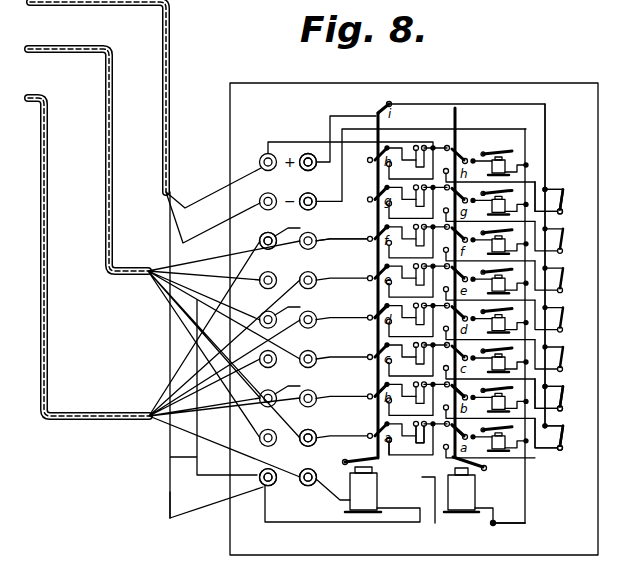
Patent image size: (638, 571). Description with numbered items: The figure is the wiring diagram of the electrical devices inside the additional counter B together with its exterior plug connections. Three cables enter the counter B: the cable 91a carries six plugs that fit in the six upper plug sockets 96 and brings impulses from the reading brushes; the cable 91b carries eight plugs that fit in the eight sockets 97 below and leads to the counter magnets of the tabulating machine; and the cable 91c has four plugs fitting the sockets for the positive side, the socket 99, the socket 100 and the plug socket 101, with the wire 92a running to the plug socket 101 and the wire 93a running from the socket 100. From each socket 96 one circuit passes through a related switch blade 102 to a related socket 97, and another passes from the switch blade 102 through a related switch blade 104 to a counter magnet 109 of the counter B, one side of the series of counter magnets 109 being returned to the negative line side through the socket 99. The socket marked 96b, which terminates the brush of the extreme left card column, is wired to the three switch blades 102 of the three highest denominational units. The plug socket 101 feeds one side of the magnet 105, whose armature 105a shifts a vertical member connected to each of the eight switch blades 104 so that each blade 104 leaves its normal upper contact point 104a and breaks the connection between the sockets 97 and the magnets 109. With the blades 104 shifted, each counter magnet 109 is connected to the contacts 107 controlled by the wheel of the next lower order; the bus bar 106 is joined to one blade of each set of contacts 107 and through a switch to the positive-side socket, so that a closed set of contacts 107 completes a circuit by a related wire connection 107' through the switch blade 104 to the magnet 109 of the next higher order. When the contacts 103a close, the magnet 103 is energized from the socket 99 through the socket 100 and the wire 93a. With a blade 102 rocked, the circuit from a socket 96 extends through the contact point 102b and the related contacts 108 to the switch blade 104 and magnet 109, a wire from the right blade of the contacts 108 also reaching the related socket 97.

The cable 91a is at (142, 270).
The cable 91b is at (110, 408).
The cable 91c is at (165, 190).
The wire 92a is at (168, 462).
The wire 93a is at (170, 496).
The upper plug socket 96 is at (316, 166).
The socket 96b is at (346, 240).
The socket 97 is at (280, 317).
The socket 99 is at (316, 206).
The socket 100 is at (314, 485).
The plug socket 101 is at (270, 485).
The switch blade 102 is at (318, 436).
The contact point 102b is at (390, 452).
The magnet 103 is at (378, 490).
The contacts 103a is at (345, 460).
The switch blade 104 is at (468, 405).
The upper contact point 104a is at (442, 340).
The magnet 105 is at (470, 500).
The armature 105a is at (487, 467).
The bus bar 106 is at (546, 129).
The contacts 107 is at (565, 297).
The wire connection 107' is at (563, 435).
The contacts 108 is at (425, 445).
The counter magnet 109 is at (508, 455).
The counter B is at (470, 82).